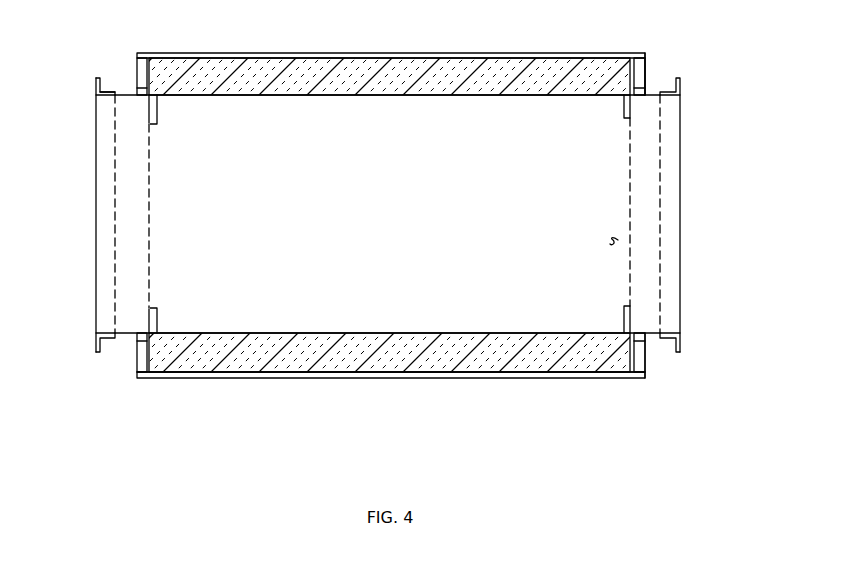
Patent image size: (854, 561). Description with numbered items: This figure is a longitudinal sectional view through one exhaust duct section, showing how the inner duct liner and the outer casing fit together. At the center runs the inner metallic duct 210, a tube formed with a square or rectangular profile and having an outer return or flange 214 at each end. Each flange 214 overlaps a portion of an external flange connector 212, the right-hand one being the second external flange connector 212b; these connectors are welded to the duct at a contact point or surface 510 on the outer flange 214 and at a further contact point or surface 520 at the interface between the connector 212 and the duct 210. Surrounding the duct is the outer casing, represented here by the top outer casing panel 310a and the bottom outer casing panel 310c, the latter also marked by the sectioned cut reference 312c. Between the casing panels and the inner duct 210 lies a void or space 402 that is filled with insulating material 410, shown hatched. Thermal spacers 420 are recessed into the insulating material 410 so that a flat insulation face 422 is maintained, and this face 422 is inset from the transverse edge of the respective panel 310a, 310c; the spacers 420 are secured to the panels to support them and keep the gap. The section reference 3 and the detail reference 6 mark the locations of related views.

The cross-section reference line 3 is at (618, 240).
The gap between end block and flange 6 is at (648, 72).
The inner metallic duct 210 is at (613, 188).
The external flanged connector 212 is at (96, 350).
The second external flange connector 212b is at (683, 348).
The outer flange 214 is at (96, 335).
The top outer casing panel 310a is at (470, 53).
The bottom outer casing panel 310c is at (470, 378).
The lower plate inner surface 312c is at (157, 378).
The void or space 402 is at (668, 68).
The insulating material 410 is at (249, 86).
The thermal spacer 420 is at (157, 120).
The flat insulation face 422 is at (140, 72).
The contact point or surface 510 is at (96, 94).
The contact point or surface 520 is at (114, 92).